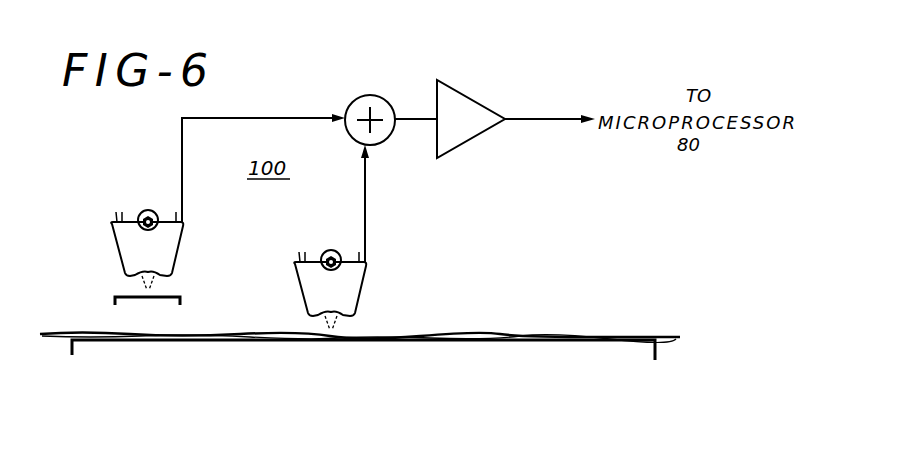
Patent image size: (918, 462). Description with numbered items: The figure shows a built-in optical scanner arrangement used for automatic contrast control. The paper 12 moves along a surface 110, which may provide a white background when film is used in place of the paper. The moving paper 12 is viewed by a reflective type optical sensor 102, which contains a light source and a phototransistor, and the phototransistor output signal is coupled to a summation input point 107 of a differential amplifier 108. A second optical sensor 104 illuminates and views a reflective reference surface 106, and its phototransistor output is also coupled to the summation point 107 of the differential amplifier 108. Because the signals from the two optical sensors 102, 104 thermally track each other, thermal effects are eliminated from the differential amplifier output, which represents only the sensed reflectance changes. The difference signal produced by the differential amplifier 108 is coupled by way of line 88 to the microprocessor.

The paper 12 is at (523, 332).
The line 88 is at (559, 121).
The reflective type optical sensor 102 is at (369, 282).
The second optical sensor 104 is at (184, 239).
The reflective reference surface 106 is at (176, 295).
The summation input point 107 is at (369, 95).
The differential amplifier 108 is at (480, 100).
The surface 110 is at (172, 341).